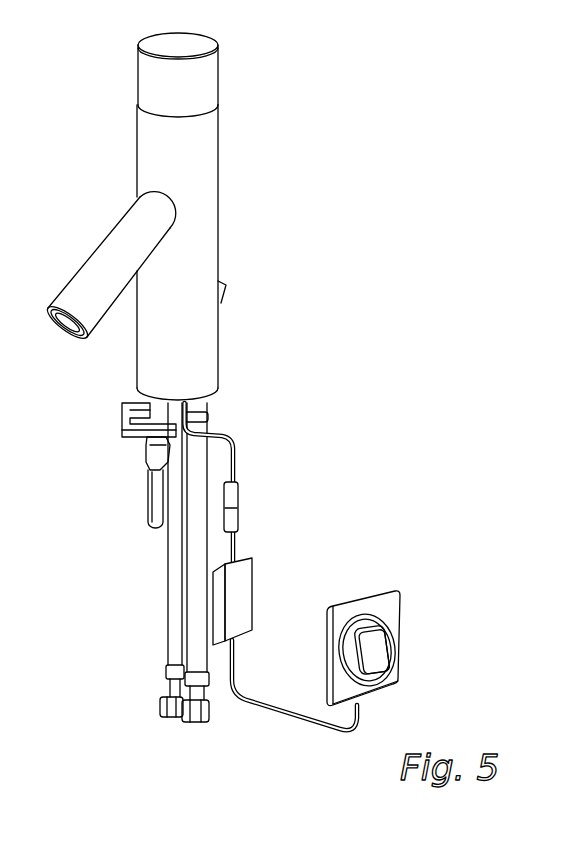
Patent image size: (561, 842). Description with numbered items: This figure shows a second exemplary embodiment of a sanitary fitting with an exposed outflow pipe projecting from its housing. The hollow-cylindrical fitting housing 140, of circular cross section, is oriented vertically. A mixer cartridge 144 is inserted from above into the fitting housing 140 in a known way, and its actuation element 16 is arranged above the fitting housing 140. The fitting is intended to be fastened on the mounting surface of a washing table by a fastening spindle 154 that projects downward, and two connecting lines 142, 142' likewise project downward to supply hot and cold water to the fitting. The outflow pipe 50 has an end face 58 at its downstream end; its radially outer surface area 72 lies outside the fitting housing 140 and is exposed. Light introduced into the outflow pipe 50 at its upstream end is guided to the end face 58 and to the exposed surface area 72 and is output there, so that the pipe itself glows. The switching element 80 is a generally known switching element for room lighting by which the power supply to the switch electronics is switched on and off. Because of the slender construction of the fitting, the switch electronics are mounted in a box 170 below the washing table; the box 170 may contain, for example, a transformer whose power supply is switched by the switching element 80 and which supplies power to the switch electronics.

The actuation element 16 is at (205, 78).
The mixer cartridge 144 is at (212, 116).
The fitting housing 140 is at (200, 191).
The radially outer surface area 72 is at (128, 247).
The outflow pipe 50 is at (100, 262).
The end face 58 is at (88, 338).
The fastening spindle 154 is at (153, 482).
The connecting line 142 is at (129, 560).
The connecting line 142' is at (136, 562).
The box 170 is at (234, 592).
The switching element 80 is at (368, 610).